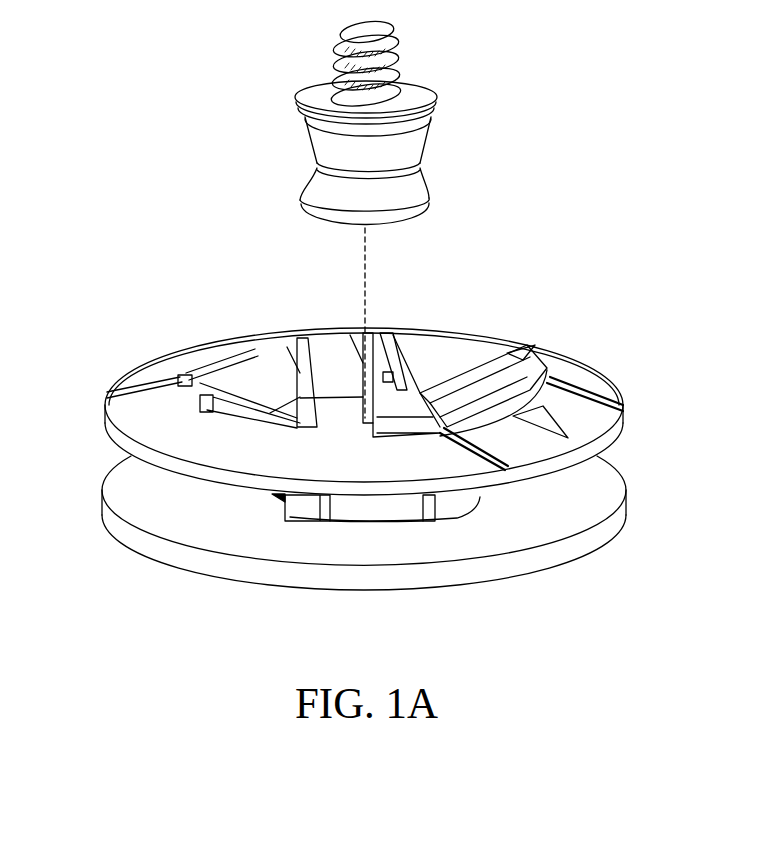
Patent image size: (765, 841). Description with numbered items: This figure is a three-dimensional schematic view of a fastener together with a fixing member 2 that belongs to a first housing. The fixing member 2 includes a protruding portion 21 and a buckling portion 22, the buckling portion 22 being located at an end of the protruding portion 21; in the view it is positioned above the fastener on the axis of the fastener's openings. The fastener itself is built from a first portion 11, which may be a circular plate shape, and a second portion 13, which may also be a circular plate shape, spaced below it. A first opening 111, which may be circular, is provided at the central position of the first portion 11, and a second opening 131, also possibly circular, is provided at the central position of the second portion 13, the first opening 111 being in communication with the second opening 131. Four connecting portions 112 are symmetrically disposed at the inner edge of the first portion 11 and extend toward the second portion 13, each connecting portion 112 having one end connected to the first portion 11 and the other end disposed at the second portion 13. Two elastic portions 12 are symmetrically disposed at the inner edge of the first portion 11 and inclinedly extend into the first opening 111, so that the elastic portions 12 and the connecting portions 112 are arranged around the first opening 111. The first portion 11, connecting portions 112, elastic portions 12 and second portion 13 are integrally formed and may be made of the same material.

The fixing member 2 is at (433, 218).
The protruding portion 21 is at (397, 163).
The buckling portion 22 is at (406, 208).
The first portion 11 is at (177, 418).
The elastic portion 12 is at (175, 370).
The first opening 111 is at (384, 380).
The connecting portion 112 is at (437, 367).
The second portion 13 is at (145, 495).
The second opening 131 is at (370, 505).